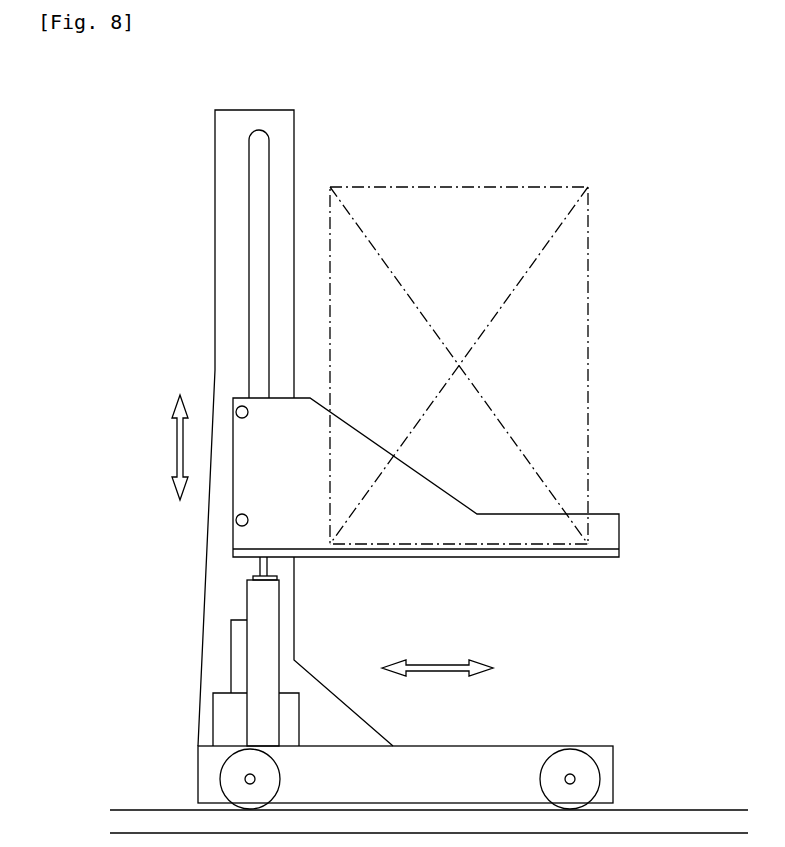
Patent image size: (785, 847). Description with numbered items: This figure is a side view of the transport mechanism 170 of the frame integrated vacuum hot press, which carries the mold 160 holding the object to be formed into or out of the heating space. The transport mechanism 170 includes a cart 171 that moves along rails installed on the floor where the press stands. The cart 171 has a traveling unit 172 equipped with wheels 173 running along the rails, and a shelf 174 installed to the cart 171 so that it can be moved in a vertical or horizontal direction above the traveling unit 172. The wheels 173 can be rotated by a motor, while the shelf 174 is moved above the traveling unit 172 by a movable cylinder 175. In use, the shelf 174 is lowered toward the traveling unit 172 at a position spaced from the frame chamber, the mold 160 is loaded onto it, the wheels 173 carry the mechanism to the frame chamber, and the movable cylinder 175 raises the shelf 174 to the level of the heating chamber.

The transport mechanism 170 is at (576, 104).
The cart 171 is at (209, 363).
The traveling unit 172 is at (450, 760).
The wheels 173 is at (232, 772).
The shelf 174 is at (500, 558).
The movable cylinder 175 is at (260, 610).
The mold 160 is at (545, 352).